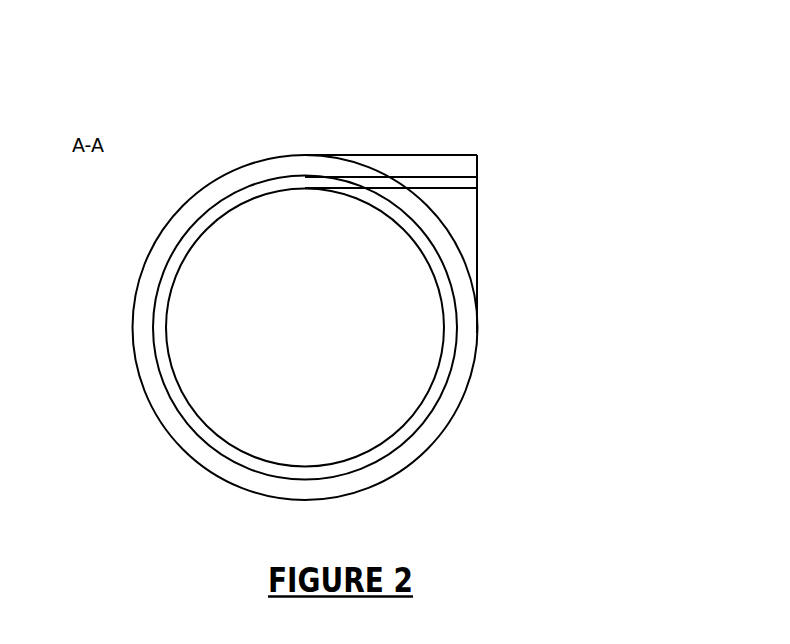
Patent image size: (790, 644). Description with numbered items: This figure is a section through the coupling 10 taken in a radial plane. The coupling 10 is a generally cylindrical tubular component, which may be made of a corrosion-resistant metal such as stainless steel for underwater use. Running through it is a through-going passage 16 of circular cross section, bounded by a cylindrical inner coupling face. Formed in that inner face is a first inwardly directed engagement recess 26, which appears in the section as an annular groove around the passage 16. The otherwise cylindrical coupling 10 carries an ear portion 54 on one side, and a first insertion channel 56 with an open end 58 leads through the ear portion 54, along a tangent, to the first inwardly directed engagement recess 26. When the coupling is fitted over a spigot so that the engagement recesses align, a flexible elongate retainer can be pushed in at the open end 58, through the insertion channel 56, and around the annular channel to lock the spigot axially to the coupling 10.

The coupling 10 is at (542, 99).
The through-going passage 16 is at (317, 334).
The first inwardly directed engagement recess 26 is at (456, 332).
The ear portion 54 is at (477, 225).
The first insertion channel 56 is at (415, 177).
The open end 58 is at (484, 181).